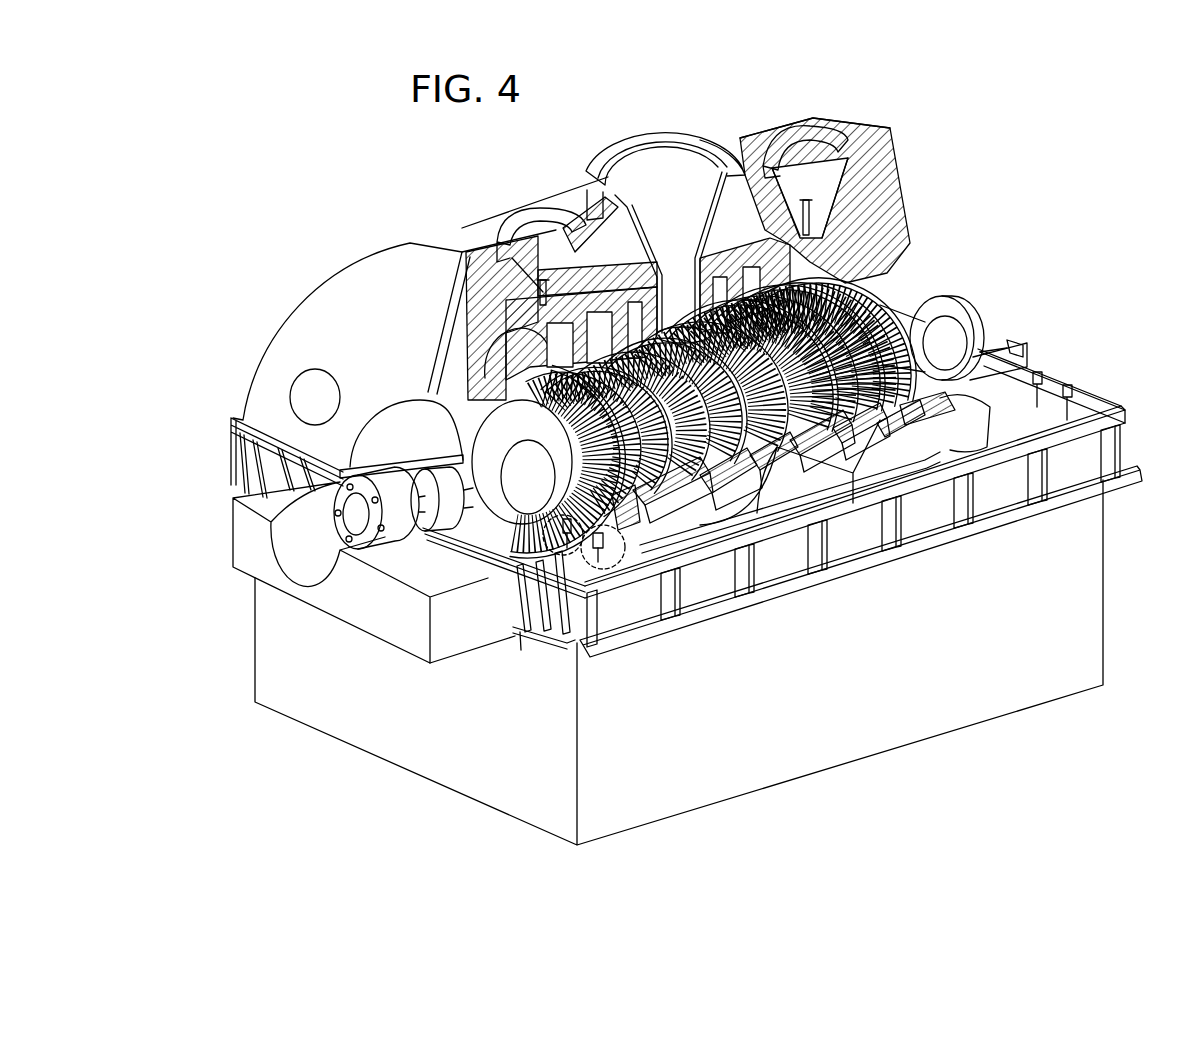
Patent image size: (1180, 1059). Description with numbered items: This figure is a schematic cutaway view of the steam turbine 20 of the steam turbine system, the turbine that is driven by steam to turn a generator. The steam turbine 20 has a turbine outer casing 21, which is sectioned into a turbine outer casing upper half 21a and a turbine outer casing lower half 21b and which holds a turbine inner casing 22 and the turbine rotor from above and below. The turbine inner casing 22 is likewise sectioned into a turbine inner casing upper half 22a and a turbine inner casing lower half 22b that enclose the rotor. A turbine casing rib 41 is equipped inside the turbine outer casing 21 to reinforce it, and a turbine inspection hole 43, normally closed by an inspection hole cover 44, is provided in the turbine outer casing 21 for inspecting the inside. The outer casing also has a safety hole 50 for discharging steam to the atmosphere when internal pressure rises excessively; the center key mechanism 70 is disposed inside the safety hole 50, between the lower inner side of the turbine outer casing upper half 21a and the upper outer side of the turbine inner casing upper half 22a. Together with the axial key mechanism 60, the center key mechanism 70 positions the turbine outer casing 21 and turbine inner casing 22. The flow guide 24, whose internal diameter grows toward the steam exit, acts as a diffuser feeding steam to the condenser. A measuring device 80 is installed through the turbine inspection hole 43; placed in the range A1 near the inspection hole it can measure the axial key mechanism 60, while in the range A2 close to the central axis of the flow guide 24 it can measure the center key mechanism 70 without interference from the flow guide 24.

The steam turbine 20 is at (260, 189).
The turbine outer casing 21 is at (1108, 93).
The turbine outer casing upper half 21a is at (858, 122).
The turbine outer casing lower half 21b is at (1105, 586).
The turbine inner casing 22 is at (1027, 203).
The turbine inner casing upper half 22a is at (766, 254).
The turbine inner casing lower half 22b is at (978, 415).
The flow guide 24 is at (484, 297).
The turbine casing rib 41 is at (560, 642).
The turbine inspection hole 43 is at (250, 397).
The inspection hole cover 44 is at (302, 393).
The safety hole 50 is at (549, 283).
The axial key mechanism 60 is at (800, 486).
The center key mechanism 70 is at (541, 273).
The measuring device 80 is at (572, 534).
The range A1 is at (618, 565).
The range A2 is at (555, 553).